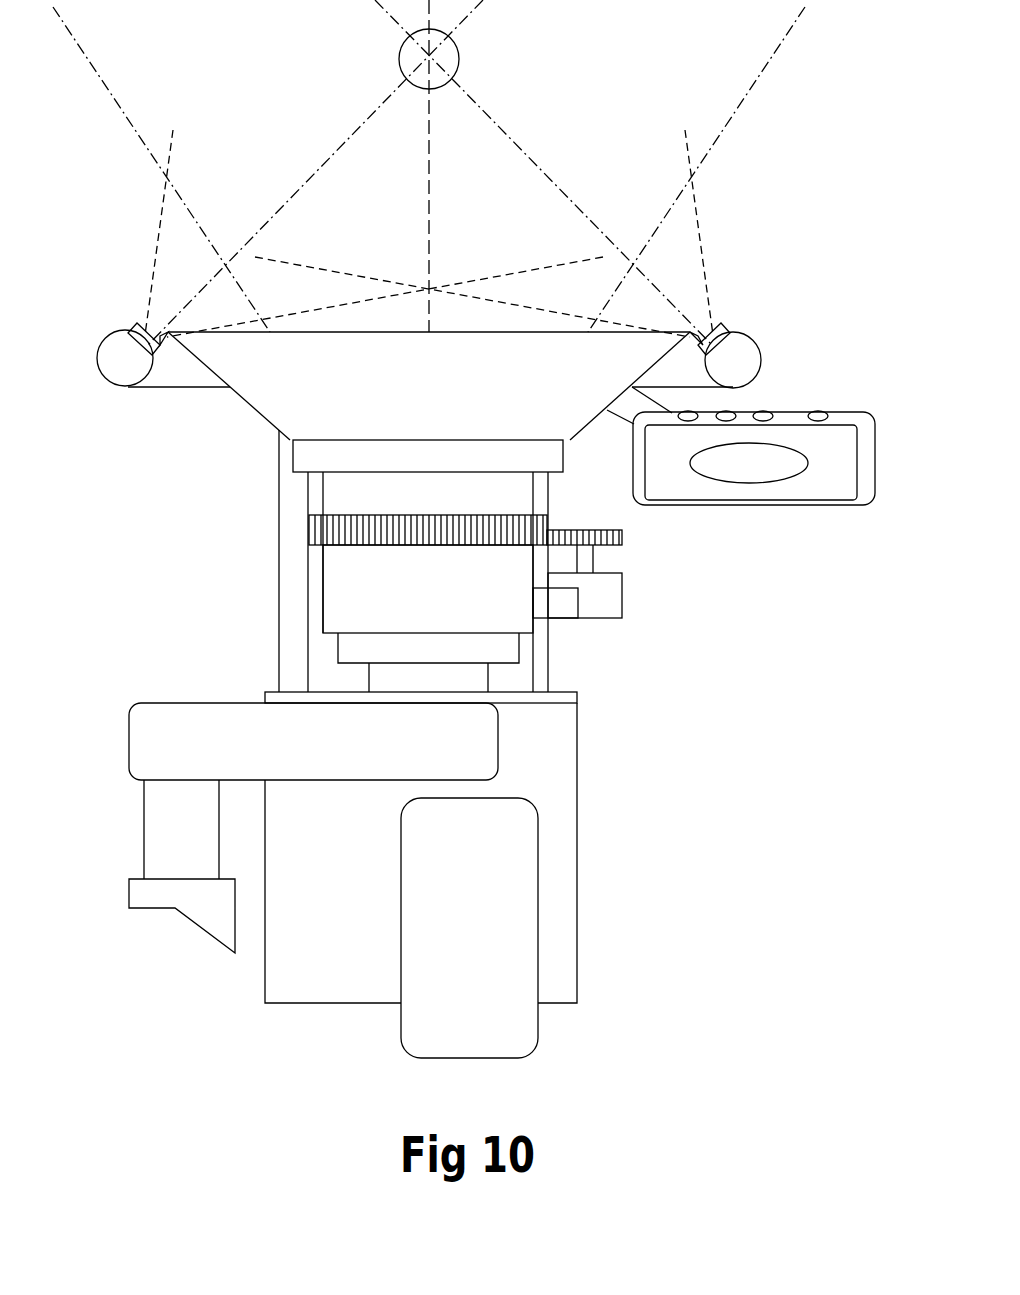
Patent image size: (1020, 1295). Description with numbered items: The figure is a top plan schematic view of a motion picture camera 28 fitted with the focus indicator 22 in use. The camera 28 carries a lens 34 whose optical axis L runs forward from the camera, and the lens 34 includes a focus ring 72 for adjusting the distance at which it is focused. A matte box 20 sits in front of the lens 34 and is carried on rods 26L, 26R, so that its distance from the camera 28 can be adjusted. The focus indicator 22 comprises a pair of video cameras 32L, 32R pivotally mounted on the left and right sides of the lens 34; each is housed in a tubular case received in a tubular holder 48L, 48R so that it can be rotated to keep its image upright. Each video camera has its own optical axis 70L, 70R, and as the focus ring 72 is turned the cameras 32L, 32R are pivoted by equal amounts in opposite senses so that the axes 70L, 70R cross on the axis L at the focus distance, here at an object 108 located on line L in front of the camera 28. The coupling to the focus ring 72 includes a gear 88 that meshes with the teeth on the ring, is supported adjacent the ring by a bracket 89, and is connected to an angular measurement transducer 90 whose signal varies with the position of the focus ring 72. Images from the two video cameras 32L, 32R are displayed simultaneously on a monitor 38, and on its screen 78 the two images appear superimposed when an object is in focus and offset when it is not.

The light source 108 is at (440, 50).
The optical axis of lens L is at (429, 172).
The optical axis of left video camera 70L is at (285, 192).
The optical axis of right video camera 70R is at (585, 211).
The matte box 20 is at (291, 392).
The left video camera 32L is at (141, 325).
The right video camera 32R is at (725, 325).
The tubular holder 48L is at (125, 368).
The tubular holder 48R is at (750, 358).
The focus indicator 22 is at (200, 388).
The monitor 38 is at (876, 428).
The monitor screen 78 is at (818, 487).
The rod 26L is at (293, 662).
The rod 26R is at (533, 681).
The lens 34 is at (353, 484).
The focus ring 72 is at (323, 527).
The gear 88 is at (623, 547).
The angular measurement transducer 90 is at (593, 586).
The bracket 89 is at (546, 608).
The motion picture camera 28 is at (537, 805).